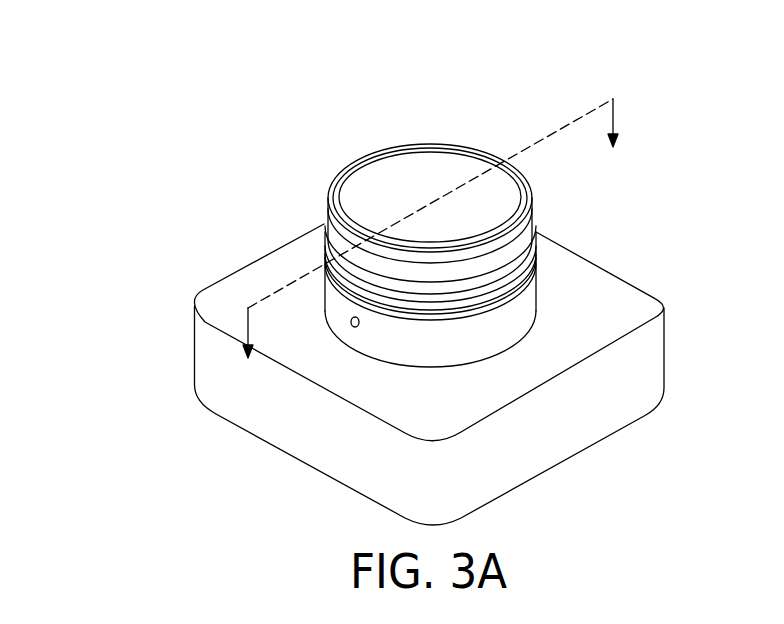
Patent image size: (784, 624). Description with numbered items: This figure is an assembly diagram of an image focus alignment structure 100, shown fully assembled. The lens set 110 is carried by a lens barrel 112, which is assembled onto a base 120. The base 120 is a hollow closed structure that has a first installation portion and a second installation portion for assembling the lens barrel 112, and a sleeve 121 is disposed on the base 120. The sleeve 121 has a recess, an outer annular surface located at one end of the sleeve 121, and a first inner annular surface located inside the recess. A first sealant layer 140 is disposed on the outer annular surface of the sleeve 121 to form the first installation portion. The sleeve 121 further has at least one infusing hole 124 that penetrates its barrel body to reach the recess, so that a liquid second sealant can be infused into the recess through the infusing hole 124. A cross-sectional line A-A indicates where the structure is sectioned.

The image focus alignment structure 100 is at (58, 108).
The lens set 110 is at (446, 166).
The lens barrel 112 is at (533, 230).
The base 120 is at (583, 265).
The sleeve 121 is at (525, 302).
The infusing hole 124 is at (350, 323).
The first sealant layer 140 is at (490, 306).